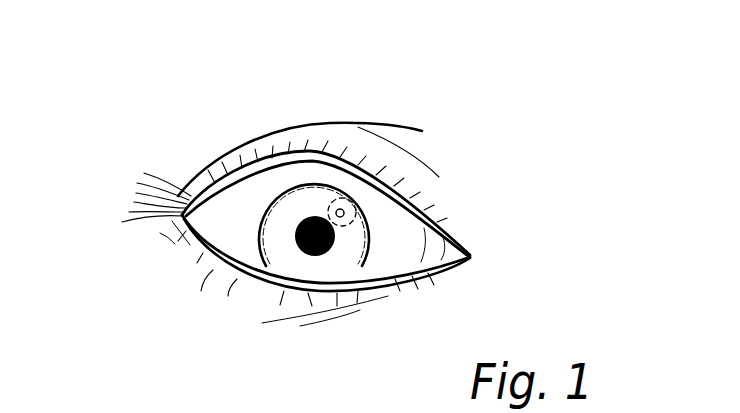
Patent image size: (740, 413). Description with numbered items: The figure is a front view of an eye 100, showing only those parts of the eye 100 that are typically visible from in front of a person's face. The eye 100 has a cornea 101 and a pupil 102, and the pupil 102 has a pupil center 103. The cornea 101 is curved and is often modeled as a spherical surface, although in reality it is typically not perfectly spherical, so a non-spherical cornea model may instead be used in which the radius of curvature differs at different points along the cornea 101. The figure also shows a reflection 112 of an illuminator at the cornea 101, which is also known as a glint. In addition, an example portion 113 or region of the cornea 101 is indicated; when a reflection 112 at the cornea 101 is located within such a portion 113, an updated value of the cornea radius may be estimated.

The eye 100 is at (203, 112).
The cornea 101 is at (320, 185).
The pupil 102 is at (327, 248).
The pupil center 103 is at (313, 237).
The reflection 112 is at (345, 211).
The portion 113 is at (352, 220).